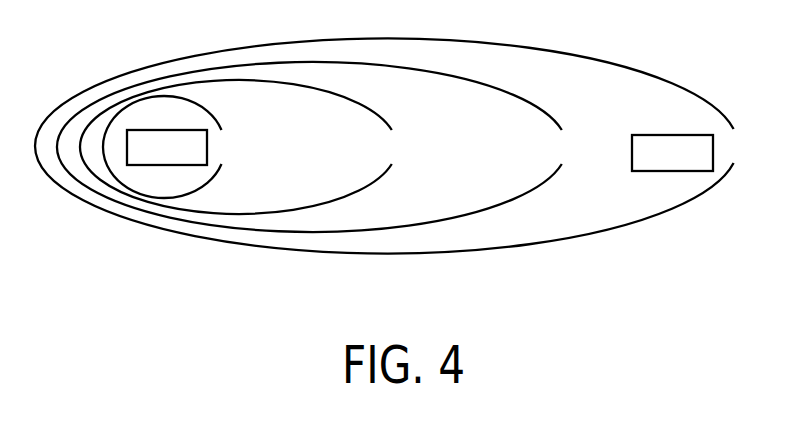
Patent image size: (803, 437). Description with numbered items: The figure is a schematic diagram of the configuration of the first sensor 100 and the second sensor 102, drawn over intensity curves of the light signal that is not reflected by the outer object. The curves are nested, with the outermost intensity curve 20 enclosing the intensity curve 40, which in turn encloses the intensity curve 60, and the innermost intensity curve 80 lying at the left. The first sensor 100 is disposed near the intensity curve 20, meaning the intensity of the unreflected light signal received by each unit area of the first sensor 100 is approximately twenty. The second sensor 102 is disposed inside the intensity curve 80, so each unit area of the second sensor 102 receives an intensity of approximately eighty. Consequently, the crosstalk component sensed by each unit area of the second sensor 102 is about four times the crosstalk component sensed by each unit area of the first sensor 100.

The intensity curve 20 is at (395, 145).
The intensity curve 40 is at (315, 147).
The intensity curve 60 is at (243, 147).
The intensity curve 80 is at (175, 147).
The first sensor 100 is at (694, 166).
The second sensor 102 is at (188, 159).